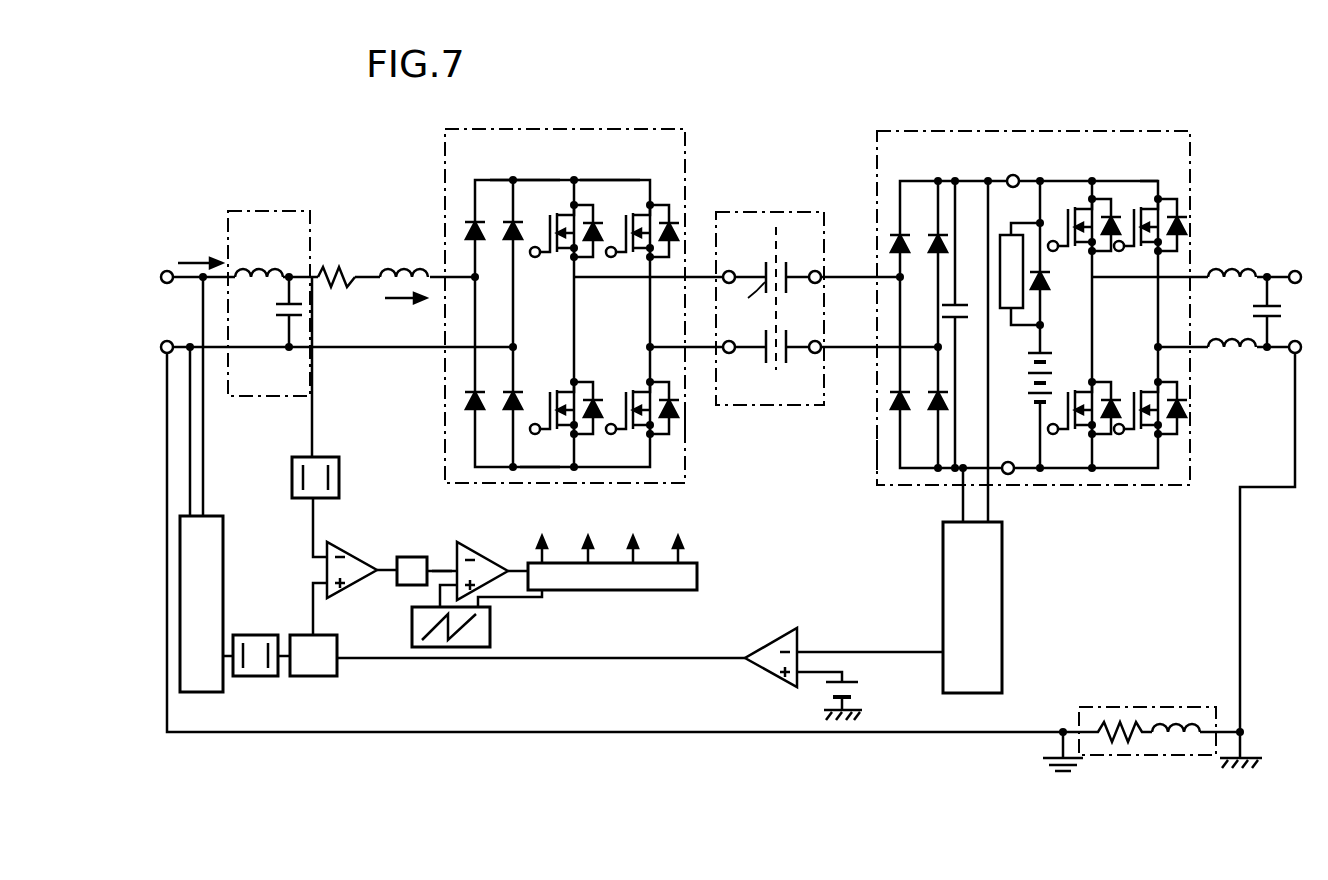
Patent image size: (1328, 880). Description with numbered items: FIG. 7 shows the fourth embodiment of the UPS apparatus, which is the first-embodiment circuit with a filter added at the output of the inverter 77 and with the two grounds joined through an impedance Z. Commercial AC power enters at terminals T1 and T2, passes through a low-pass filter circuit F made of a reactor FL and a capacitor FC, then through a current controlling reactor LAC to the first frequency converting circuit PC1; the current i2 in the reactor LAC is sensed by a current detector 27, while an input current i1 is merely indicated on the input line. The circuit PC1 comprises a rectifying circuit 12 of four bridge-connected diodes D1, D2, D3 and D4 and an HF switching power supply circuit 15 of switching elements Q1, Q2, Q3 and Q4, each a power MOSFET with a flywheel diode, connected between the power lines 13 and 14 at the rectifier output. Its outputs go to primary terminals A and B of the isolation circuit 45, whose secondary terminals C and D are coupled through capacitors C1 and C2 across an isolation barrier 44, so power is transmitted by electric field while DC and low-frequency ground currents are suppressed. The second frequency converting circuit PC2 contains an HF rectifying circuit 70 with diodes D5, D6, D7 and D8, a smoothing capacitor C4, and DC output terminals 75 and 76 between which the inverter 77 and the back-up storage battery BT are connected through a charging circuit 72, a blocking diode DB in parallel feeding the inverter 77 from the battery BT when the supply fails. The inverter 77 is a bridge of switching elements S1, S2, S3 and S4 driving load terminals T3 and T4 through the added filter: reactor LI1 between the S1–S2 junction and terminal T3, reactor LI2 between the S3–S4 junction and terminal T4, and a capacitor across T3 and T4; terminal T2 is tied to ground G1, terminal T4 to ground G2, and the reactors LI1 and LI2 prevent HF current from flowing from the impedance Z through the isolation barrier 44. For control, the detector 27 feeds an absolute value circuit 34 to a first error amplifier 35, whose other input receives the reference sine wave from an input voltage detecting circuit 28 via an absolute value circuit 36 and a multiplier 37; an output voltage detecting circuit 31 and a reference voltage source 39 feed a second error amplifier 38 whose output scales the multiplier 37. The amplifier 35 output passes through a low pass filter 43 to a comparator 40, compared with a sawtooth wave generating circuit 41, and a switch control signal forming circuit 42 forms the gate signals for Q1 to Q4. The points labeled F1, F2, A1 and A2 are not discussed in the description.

The rectifying circuit 12 is at (489, 170).
The power line 13 is at (536, 178).
The power line 14 is at (530, 466).
The HF switching power supply circuit 15 is at (612, 178).
The current detector 27 is at (322, 280).
The input voltage detecting circuit 28 is at (212, 516).
The output voltage detecting circuit 31 is at (943, 597).
The absolute value circuit 34 is at (292, 466).
The first error amplifier 35 is at (325, 565).
The absolute value circuit 36 is at (258, 635).
The multiplication circuit 37 is at (340, 670).
The second error amplifier 38 is at (756, 674).
The reference voltage source 39 is at (854, 690).
The voltage comparator 40 is at (479, 550).
The sawtooth wave generating circuit 41 is at (492, 620).
The switch control signal forming circuit 42 is at (698, 576).
The low pass filter 43 is at (406, 556).
The isolation barrier 44 is at (776, 256).
The isolation circuit 45 is at (785, 212).
The HF rectifying circuit 70 is at (920, 170).
The charging circuit 72 is at (1009, 233).
The DC output terminal 75 is at (1015, 176).
The DC output terminal 76 is at (1008, 461).
The inverter 77 is at (1128, 178).
The commercial AC power source terminal T1 is at (167, 270).
The commercial AC power source terminal T2 is at (167, 341).
The load terminal T3 is at (1292, 270).
The load terminal T4 is at (1292, 354).
The low-pass filter circuit F is at (295, 211).
The reactor FL is at (272, 272).
The capacitor FC is at (284, 308).
The current controlling reactor LAC is at (402, 272).
The input current i1 is at (200, 250).
The current i2 is at (405, 311).
The diode D1 is at (480, 225).
The diode D2 is at (480, 390).
The diode D3 is at (510, 250).
The diode D4 is at (510, 414).
The first switching element Q1 is at (533, 262).
The second switching element Q2 is at (546, 388).
The third switching element Q3 is at (622, 232).
The fourth switching element Q4 is at (620, 388).
The first frequency converting circuit PC1 is at (686, 426).
The second frequency converting circuit PC2 is at (876, 462).
The primary side terminal A is at (732, 270).
The primary side terminal B is at (731, 354).
The secondary side terminal C is at (814, 270).
The secondary side terminal D is at (814, 354).
The capacitor C2 is at (765, 340).
The diode D5 is at (905, 233).
The diode D6 is at (903, 392).
The diode D7 is at (935, 256).
The diode D8 is at (935, 414).
The smoothing capacitor C4 is at (957, 320).
The fifth switching element S1 is at (1054, 252).
The sixth switching element S2 is at (1078, 388).
The seventh switching element S3 is at (1134, 234).
The eighth switching element S4 is at (1144, 388).
The blocking diode DB is at (1049, 292).
The interruption back-up storage battery BT is at (1031, 352).
The reactor LI1 is at (1230, 270).
The reactor LI2 is at (1228, 354).
The capacitor C1 is at (1254, 307).
The current feedback signal F1 is at (309, 530).
The voltage feedback signal F2 is at (311, 600).
The amplified error signal A1 is at (446, 565).
The sawtooth signal A2 is at (438, 598).
The impedance Z is at (1141, 707).
The ground G1 is at (1050, 748).
The ground G2 is at (1252, 748).